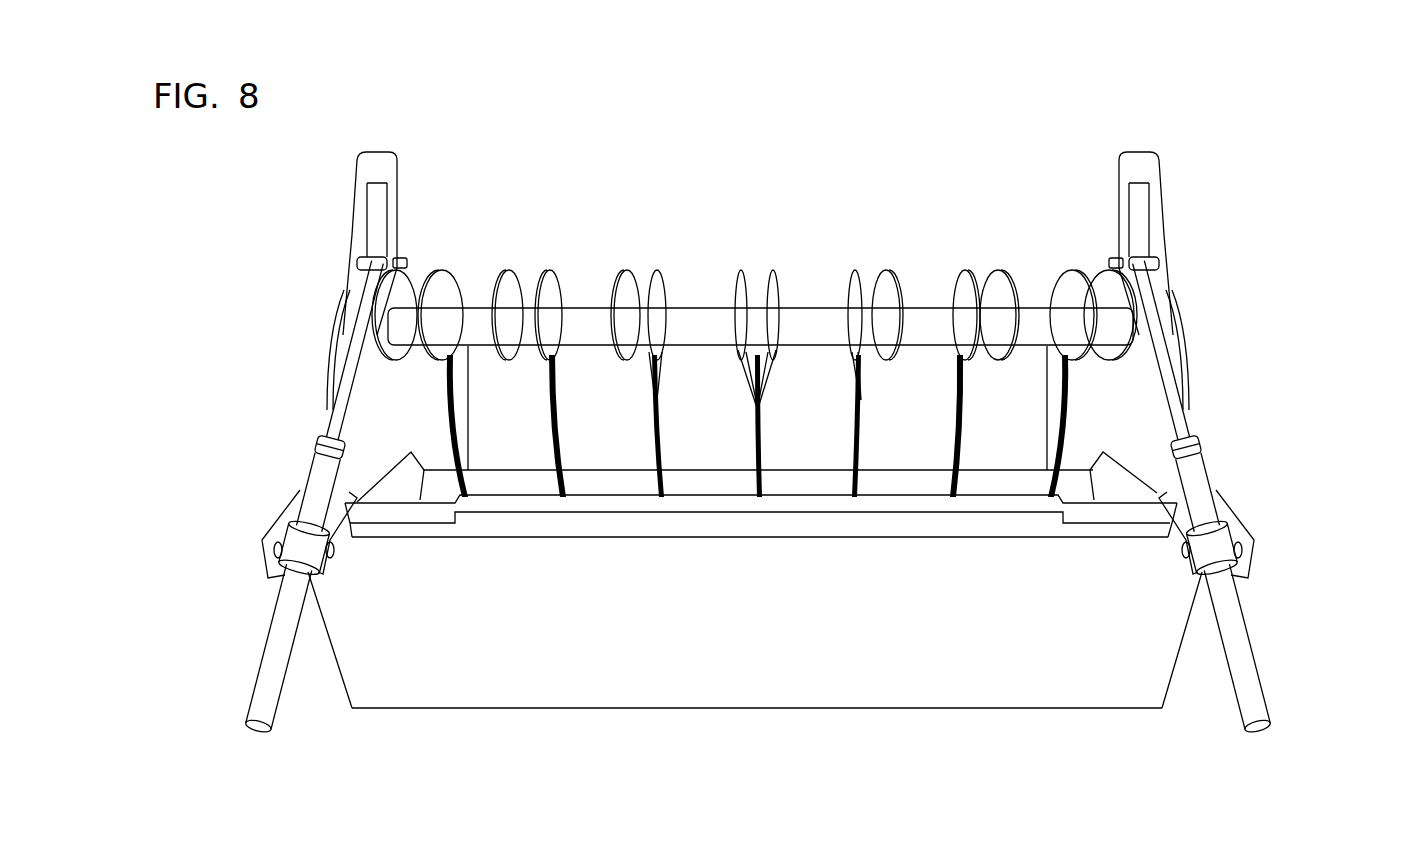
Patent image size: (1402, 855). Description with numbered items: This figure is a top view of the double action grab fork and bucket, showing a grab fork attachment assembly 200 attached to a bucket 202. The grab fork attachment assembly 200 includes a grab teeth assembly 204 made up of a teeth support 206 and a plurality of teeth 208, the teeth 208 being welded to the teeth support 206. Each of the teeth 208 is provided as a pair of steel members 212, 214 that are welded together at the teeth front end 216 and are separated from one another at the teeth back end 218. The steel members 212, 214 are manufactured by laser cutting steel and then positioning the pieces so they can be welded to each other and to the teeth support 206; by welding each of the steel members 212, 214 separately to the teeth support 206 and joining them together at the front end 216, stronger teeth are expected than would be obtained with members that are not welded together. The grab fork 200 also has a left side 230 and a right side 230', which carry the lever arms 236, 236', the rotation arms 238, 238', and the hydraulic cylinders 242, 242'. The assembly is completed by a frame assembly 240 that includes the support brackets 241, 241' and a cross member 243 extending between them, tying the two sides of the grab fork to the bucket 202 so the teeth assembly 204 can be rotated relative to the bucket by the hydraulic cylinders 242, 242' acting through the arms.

The grab fork attachment assembly 200 is at (1194, 230).
The bucket 202 is at (1127, 685).
The grab teeth assembly 204 is at (828, 230).
The teeth support 206 is at (917, 323).
The teeth 208 is at (663, 270).
The steel member 212 is at (739, 272).
The steel member 214 is at (773, 272).
The teeth front end 216 is at (953, 465).
The teeth back end 218 is at (535, 268).
The left side 230 is at (273, 444).
The right side 230' is at (1249, 438).
The lever arm 236 is at (295, 350).
The lever arm 236' is at (1216, 350).
The rotation arm 238 is at (330, 243).
The rotation arm 238' is at (1174, 238).
The frame assembly 240 is at (205, 522).
The support bracket 241 is at (284, 533).
The support bracket 241' is at (1242, 534).
The hydraulic cylinder 242 is at (314, 496).
The hydraulic cylinder 242' is at (1212, 496).
The cross member 243 is at (432, 530).